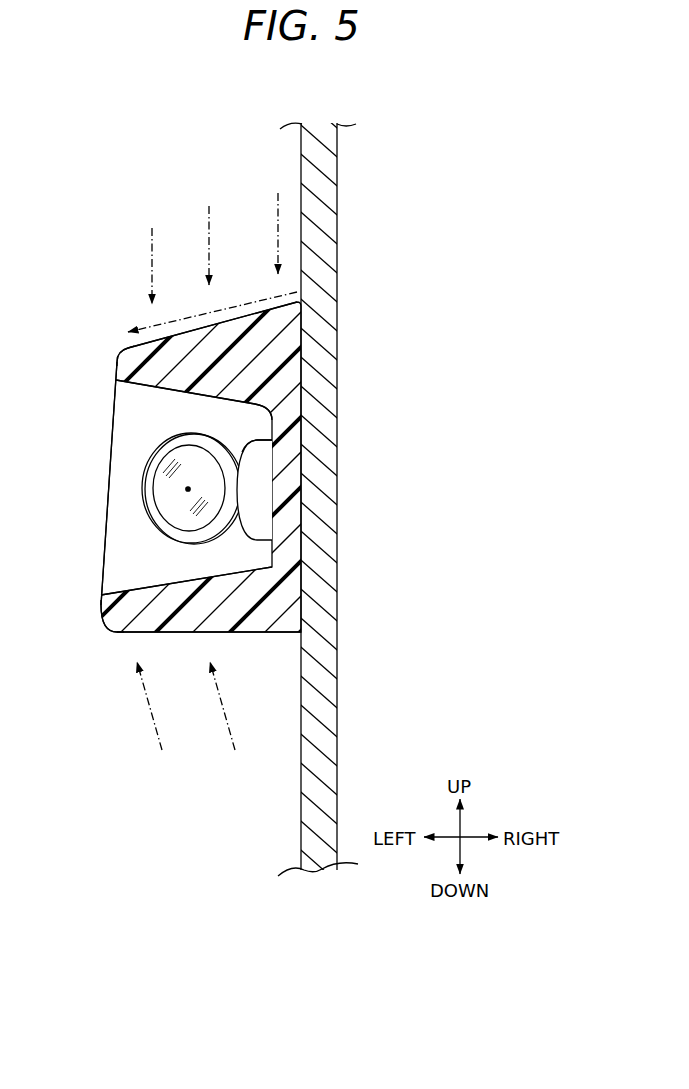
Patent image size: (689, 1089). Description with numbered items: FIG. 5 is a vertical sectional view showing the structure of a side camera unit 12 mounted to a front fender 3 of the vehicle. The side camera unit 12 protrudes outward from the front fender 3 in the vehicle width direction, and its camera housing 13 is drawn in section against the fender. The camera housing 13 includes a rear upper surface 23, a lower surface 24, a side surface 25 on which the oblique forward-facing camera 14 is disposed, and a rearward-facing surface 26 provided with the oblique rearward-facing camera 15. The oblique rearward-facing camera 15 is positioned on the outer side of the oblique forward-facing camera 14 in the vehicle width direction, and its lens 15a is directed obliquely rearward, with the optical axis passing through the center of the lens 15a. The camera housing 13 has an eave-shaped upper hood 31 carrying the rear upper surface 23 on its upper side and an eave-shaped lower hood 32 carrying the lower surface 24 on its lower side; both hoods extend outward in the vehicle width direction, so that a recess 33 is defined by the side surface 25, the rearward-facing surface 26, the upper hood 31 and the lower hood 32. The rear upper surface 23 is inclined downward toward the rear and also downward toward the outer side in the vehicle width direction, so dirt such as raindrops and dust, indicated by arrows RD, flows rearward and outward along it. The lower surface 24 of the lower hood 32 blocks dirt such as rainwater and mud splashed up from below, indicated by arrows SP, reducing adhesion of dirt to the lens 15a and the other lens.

The front fender 3 is at (301, 790).
The side camera unit 12 is at (120, 299).
The camera housing 13 is at (114, 378).
The oblique forward-facing camera 14 is at (262, 542).
The oblique rearward-facing camera 15 is at (140, 480).
The lens 15a is at (167, 502).
The rear upper surface 23 is at (177, 335).
The lower surface 24 is at (188, 633).
The side surface 25 is at (263, 428).
The rearward-facing surface 26 is at (132, 423).
The upper hood 31 is at (113, 352).
The lower hood 32 is at (110, 620).
The recess 33 is at (129, 562).
The arrows RD is at (215, 237).
The arrows SP is at (191, 719).